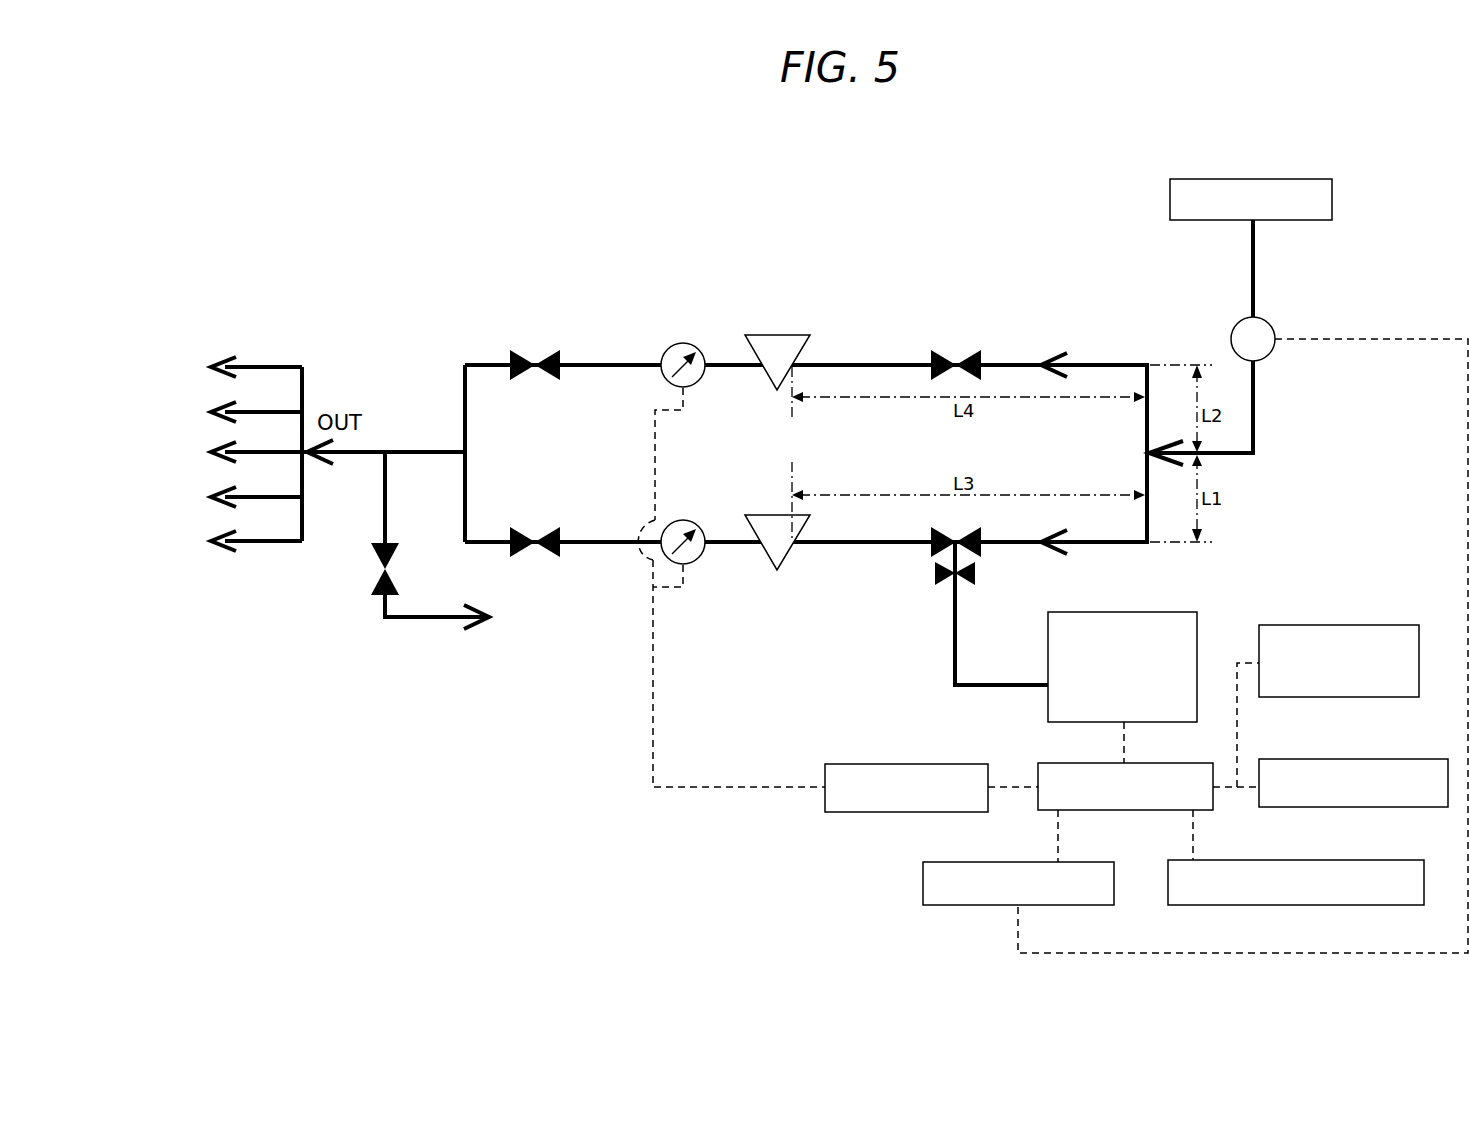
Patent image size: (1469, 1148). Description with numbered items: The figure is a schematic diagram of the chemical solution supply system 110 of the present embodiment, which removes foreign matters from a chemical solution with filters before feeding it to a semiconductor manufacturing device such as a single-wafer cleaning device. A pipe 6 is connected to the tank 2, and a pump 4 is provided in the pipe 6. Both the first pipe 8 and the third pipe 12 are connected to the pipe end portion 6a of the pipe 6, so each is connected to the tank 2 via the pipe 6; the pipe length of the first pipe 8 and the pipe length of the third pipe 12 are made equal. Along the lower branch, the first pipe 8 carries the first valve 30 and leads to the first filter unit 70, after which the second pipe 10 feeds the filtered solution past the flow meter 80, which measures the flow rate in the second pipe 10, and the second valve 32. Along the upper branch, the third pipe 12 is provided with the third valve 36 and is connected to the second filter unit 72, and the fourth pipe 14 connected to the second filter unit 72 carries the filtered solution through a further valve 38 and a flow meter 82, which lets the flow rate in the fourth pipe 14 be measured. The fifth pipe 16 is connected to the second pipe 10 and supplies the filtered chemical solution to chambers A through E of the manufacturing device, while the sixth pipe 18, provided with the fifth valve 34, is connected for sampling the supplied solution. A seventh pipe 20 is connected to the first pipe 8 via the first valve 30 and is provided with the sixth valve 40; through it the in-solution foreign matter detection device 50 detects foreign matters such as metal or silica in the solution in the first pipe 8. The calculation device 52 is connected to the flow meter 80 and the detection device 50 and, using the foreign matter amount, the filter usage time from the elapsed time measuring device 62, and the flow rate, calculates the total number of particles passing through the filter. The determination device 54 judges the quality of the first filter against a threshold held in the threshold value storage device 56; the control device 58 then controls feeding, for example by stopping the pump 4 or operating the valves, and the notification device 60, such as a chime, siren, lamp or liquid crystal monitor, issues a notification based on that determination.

The tank 2 is at (1290, 178).
The pump 4 is at (1276, 330).
The pipe 6 is at (1255, 408).
The pipe end portion 6a is at (1147, 455).
The first pipe 8 is at (1096, 545).
The second pipe 10 is at (596, 541).
The third pipe 12 is at (1098, 364).
The fourth pipe 14 is at (596, 364).
The fifth pipe 16 is at (257, 338).
The sixth pipe 18 is at (430, 616).
The seventh pipe 20 is at (1000, 684).
The first valve 30 is at (932, 558).
The second valve 32 is at (522, 527).
The fifth valve 34 is at (392, 543).
The third valve 36 is at (945, 350).
The valve 38 is at (522, 350).
The sixth valve 40 is at (976, 573).
The in-solution foreign matter detection device 50 is at (1175, 611).
The calculation device 52 is at (955, 763).
The determination device 54 is at (1190, 762).
The threshold value storage device 56 is at (1408, 758).
The control device 58 is at (987, 861).
The notification device 60 is at (1215, 859).
The elapsed time measuring device 62 is at (1355, 624).
The first filter unit 70 is at (755, 514).
The second filter unit 72 is at (752, 334).
The flow meter 80 is at (683, 520).
The flow meter 82 is at (683, 343).
The chemical solution supply system 110 is at (1381, 180).